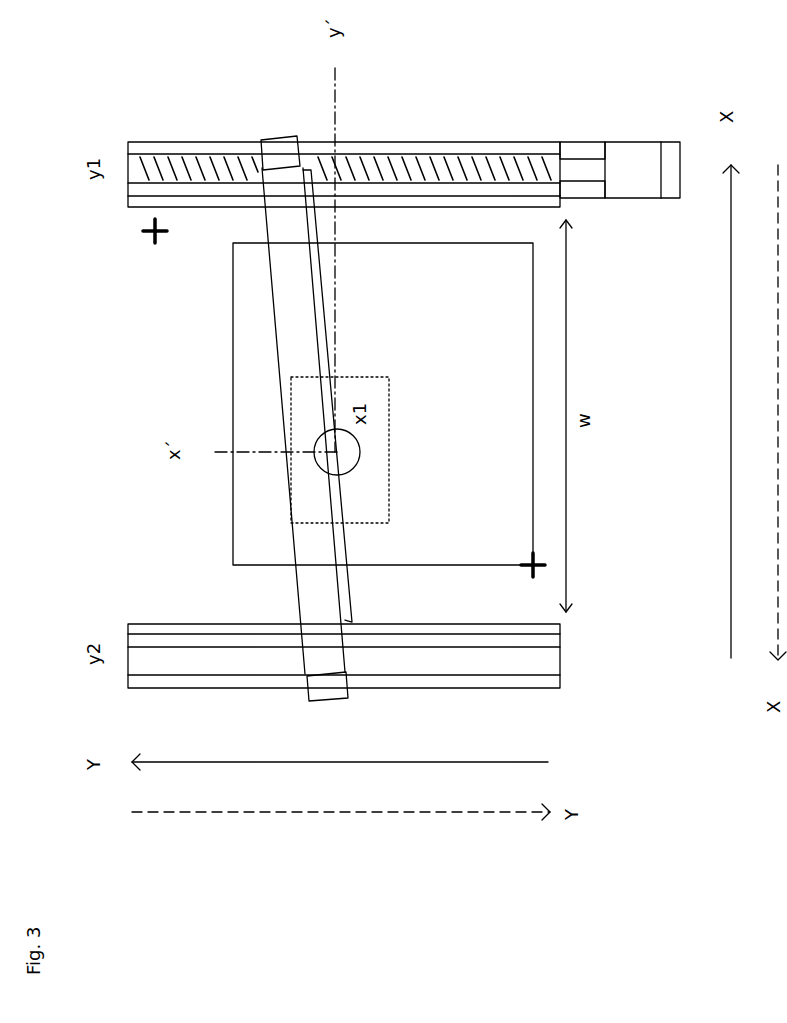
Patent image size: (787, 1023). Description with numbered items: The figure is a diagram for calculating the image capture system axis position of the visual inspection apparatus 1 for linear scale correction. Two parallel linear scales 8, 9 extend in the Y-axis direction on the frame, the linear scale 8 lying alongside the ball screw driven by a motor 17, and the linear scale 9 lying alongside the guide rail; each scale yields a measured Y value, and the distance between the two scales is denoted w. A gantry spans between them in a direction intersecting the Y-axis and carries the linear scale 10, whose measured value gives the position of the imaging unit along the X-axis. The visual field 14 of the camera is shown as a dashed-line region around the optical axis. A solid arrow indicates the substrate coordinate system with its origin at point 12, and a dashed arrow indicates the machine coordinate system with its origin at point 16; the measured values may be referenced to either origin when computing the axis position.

The visual inspection apparatus 1 is at (100, 425).
The linear scale 8 is at (213, 200).
The linear scale 9 is at (168, 624).
The linear scale 10 is at (330, 332).
The substrate coordinate system origin 12 is at (528, 558).
The visual field 14 is at (290, 413).
The machine coordinate system origin 16 is at (120, 234).
The motor 17 is at (640, 141).